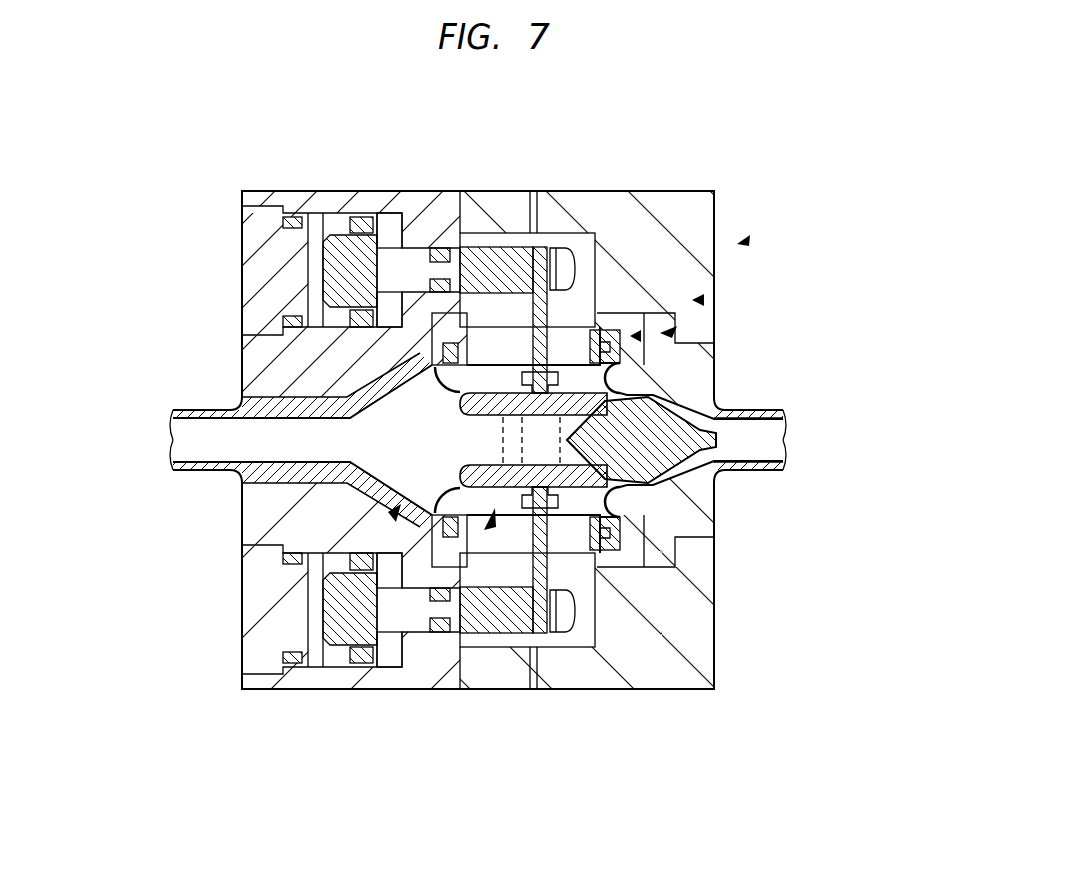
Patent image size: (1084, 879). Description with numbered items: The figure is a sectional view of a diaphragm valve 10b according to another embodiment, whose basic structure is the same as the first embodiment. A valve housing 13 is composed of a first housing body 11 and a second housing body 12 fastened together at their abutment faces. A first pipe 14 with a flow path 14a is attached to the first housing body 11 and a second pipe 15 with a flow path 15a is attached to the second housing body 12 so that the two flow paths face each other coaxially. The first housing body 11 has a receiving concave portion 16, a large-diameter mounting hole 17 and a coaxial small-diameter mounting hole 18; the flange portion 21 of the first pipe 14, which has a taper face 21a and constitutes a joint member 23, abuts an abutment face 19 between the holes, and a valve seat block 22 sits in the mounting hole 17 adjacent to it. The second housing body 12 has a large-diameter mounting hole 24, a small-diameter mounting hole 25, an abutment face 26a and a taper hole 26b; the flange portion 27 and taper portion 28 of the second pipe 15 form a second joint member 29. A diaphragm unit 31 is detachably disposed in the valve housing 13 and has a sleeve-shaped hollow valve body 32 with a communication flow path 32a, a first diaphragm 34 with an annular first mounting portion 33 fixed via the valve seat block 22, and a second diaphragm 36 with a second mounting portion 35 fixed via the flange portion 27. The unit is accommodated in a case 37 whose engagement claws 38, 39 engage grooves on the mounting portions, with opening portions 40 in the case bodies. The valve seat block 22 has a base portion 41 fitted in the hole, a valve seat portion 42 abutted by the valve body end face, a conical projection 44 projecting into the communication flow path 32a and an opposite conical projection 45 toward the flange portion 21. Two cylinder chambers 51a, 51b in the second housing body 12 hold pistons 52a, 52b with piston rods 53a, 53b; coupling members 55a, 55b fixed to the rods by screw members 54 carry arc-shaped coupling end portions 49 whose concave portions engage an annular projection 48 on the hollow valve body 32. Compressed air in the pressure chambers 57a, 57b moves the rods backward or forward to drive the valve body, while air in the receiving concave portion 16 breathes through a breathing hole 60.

The diaphragm valve 10b is at (748, 239).
The first housing body 11 is at (702, 630).
The second housing body 12 is at (322, 670).
The valve housing 13 is at (716, 303).
The first pipe 14 is at (745, 402).
The flow path 14a is at (762, 420).
The second pipe 15 is at (215, 468).
The flow path 15a is at (200, 440).
The receiving concave portion 16 is at (590, 640).
The large-diameter mounting hole 17 is at (622, 262).
The small-diameter mounting hole 18 is at (702, 344).
The abutment face 19 is at (702, 560).
The flange portion 21 is at (702, 515).
The taper face 21a is at (736, 466).
The valve seat block 22 is at (702, 318).
The joint member 23 is at (702, 332).
The large-diameter mounting hole 24 is at (472, 250).
The small-diameter mounting hole 25 is at (300, 490).
The abutment face 26a is at (420, 340).
The taper hole 26b is at (360, 385).
The flange portion 27 is at (432, 648).
The taper portion 28 is at (360, 495).
The second joint member 29 is at (350, 510).
The diaphragm unit 31 is at (512, 625).
The hollow valve body 32 is at (458, 400).
The communication flow path 32a is at (470, 430).
The first mounting portion 33 is at (702, 490).
The first diaphragm 34 is at (697, 362).
The second mounting portion 35 is at (440, 356).
The second diaphragm 36 is at (440, 500).
The case 37 is at (617, 565).
The engagement claw 38 is at (645, 565).
The engagement claw 39 is at (330, 535).
The opening portion 40 is at (596, 350).
The base portion 41 is at (700, 535).
The valve seat portion 42 is at (730, 392).
The conical projection 44 is at (500, 445).
The conical projection 45 is at (702, 443).
The annular projection 48 is at (520, 500).
The coupling end portion 49 is at (522, 384).
The cylinder chamber 51a is at (317, 243).
The cylinder chamber 51b is at (317, 637).
The piston 52a is at (357, 273).
The piston 52b is at (357, 607).
The piston rod 53a is at (505, 255).
The piston rod 53b is at (480, 640).
The screw member 54 is at (560, 262).
The coupling member 55a is at (545, 255).
The coupling member 55b is at (535, 640).
The pressure chamber for backward movement 57a is at (395, 235).
The pressure chamber for forward movement 57b is at (317, 297).
The breathing hole 60 is at (530, 250).